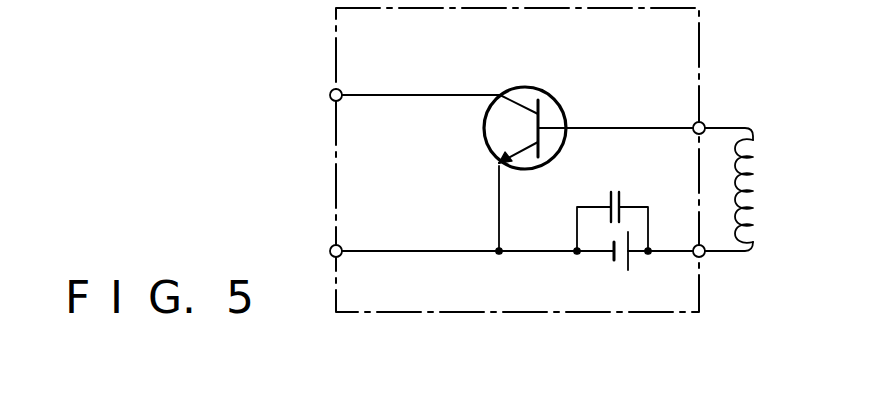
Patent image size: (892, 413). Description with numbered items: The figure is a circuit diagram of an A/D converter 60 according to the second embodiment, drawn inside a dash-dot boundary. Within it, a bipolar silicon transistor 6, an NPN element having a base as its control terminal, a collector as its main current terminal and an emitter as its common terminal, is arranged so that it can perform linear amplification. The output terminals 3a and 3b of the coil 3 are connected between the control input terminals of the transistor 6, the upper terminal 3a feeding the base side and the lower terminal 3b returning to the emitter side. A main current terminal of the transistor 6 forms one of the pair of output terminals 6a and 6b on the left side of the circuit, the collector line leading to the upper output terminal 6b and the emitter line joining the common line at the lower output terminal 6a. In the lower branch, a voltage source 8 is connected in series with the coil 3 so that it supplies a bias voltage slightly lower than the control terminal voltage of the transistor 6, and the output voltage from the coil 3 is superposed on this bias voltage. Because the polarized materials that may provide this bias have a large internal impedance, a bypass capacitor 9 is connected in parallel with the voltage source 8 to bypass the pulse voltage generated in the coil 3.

The coil 3 is at (757, 170).
The output terminal of the coil 3a is at (703, 122).
The output terminal of the coil 3b is at (704, 257).
The bipolar silicon transistor 6 is at (553, 92).
The output terminal 6a is at (330, 248).
The output terminal 6b is at (330, 92).
The voltage source 8 is at (620, 269).
The bypass capacitor 9 is at (612, 190).
The A/D converter 60 is at (483, 314).